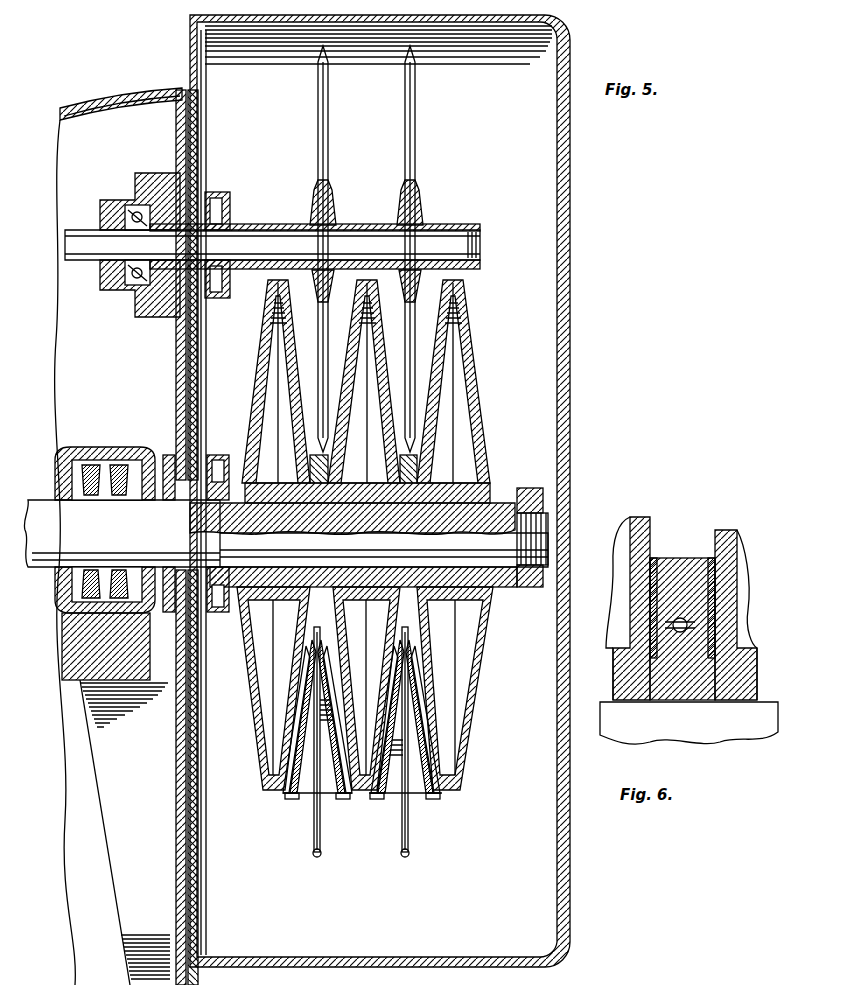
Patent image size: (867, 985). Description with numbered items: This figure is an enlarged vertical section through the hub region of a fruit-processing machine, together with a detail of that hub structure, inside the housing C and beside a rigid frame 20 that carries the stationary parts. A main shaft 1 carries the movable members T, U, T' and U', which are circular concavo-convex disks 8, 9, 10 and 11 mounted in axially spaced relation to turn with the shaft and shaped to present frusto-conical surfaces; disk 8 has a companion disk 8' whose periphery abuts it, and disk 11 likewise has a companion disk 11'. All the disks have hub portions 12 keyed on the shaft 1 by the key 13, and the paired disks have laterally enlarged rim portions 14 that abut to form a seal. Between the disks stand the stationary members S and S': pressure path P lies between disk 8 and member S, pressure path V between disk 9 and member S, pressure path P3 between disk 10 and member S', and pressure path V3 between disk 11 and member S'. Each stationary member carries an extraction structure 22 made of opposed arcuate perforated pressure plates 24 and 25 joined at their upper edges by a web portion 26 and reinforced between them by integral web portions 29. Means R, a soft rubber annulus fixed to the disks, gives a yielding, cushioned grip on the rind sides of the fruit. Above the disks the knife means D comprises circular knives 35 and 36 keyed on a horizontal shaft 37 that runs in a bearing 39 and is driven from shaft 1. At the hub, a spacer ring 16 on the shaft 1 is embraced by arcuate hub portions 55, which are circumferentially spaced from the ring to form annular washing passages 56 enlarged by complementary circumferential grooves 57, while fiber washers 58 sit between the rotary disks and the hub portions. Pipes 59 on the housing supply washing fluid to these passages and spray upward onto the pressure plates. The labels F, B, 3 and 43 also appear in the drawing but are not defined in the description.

In FIG. 5, the housing C is at (572, 175).
In FIG. 5, the frame F is at (105, 100).
In FIG. 5, the knife means D is at (420, 150).
In FIG. 5, the upper cone assembly B is at (412, 381).
In FIG. 5, the rigid frame 20 is at (182, 395).
In FIG. 5, the bearing 39 is at (135, 210).
In FIG. 5, the horizontal shaft 37 is at (275, 235).
In FIG. 5, the circular knife 36 is at (328, 105).
In FIG. 5, the circular knife 35 is at (415, 100).
In FIG. 5, the rim portions 14 is at (280, 290).
In FIG. 5, the companion disk 11' is at (267, 381).
In FIG. 5, the disk 11 is at (280, 372).
In FIG. 5, the disk 10 is at (337, 388).
In FIG. 5, the disk 9 is at (375, 350).
In FIG. 6, the disk 9 is at (640, 520).
In FIG. 5, the disk 8 is at (468, 363).
In FIG. 6, the disk 8 is at (736, 592).
In FIG. 5, the companion disk 8' is at (468, 381).
In FIG. 5, the arcuate hub portions 55 is at (314, 465).
In FIG. 6, the arcuate hub portions 55 is at (680, 560).
In FIG. 5, the spacer ring 16 is at (338, 482).
In FIG. 6, the spacer ring 16 is at (688, 680).
In FIG. 5, the annular washing passages 56 is at (405, 470).
In FIG. 6, the annular washing passages 56 is at (673, 625).
In FIG. 6, the circumferential grooves 57 is at (690, 622).
In FIG. 5, the fiber washers 58 is at (418, 470).
In FIG. 6, the fiber washers 58 is at (712, 580).
In FIG. 5, the hub portions 12 is at (455, 495).
In FIG. 6, the hub portions 12 is at (745, 660).
In FIG. 5, the key 13 is at (527, 490).
In FIG. 5, the shaft 1 is at (286, 533).
In FIG. 6, the shaft 1 is at (765, 706).
In FIG. 5, the bearing 3 is at (105, 470).
In FIG. 5, the web portion 26 is at (326, 603).
In FIG. 5, the movable member U' is at (265, 688).
In FIG. 5, the pressure path V3 is at (300, 718).
In FIG. 5, the stationary member S' is at (271, 745).
In FIG. 5, the pressure path P3 is at (335, 748).
In FIG. 5, the pressure plate 25 is at (300, 776).
In FIG. 5, the foot 43 is at (290, 800).
In FIG. 5, the extraction structure 22 is at (300, 805).
In FIG. 5, the web portions 29 is at (318, 778).
In FIG. 5, the movable member T' is at (344, 818).
In FIG. 5, the stationary member S is at (371, 837).
In FIG. 5, the pressure plate 24 is at (415, 800).
In FIG. 5, the pipes 59 is at (318, 857).
In FIG. 5, the means for effecting resilient contact R is at (435, 700).
In FIG. 5, the movable member T is at (463, 688).
In FIG. 5, the movable member U is at (443, 733).
In FIG. 5, the pressure path V is at (385, 765).
In FIG. 5, the pressure path P is at (445, 778).